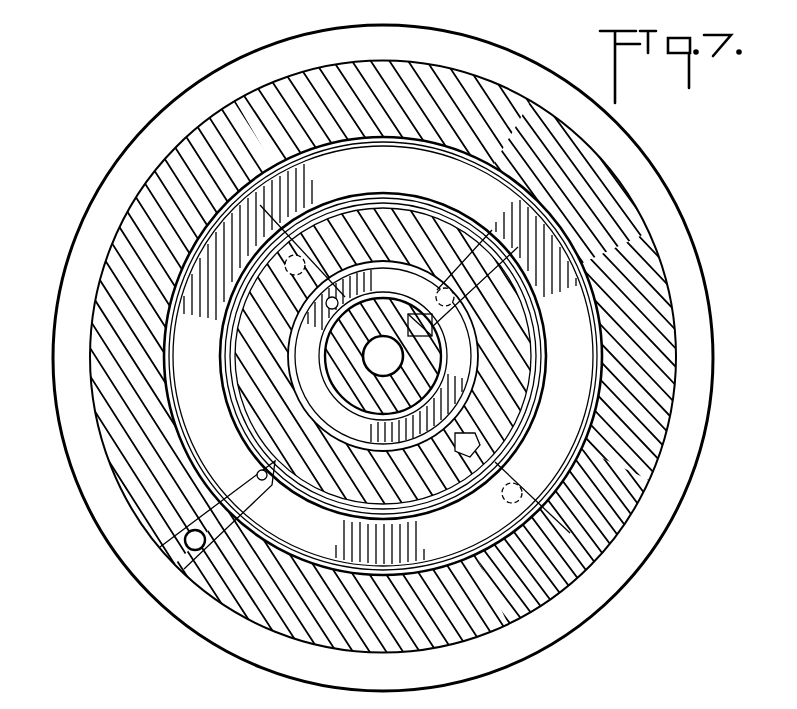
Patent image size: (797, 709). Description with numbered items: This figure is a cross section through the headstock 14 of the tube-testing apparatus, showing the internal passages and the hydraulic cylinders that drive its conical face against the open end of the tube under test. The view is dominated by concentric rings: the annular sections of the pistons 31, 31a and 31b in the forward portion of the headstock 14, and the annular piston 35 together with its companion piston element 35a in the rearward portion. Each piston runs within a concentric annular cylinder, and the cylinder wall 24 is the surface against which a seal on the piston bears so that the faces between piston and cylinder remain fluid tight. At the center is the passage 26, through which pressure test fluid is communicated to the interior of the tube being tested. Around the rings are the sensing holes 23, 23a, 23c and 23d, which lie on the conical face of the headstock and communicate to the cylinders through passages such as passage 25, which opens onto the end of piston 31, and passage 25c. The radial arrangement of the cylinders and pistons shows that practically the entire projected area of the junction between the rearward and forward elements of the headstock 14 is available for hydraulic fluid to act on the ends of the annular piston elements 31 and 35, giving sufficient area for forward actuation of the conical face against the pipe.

The headstock 14 is at (188, 89).
The cylinder wall 24 is at (520, 623).
The annular piston (rearward portion) 35 is at (200, 284).
The annular piston element 35a is at (241, 359).
The annular piston (forward portion) 31 is at (567, 570).
The annular piston 31a is at (510, 400).
The annular piston 31b is at (430, 365).
The passage 26 is at (384, 322).
The sensing hole 23a is at (333, 297).
The passage 23d is at (455, 237).
The sensing hole 23c is at (478, 443).
The sensing hole 23 is at (267, 497).
The passage 25 is at (185, 542).
The passage 25c is at (507, 503).